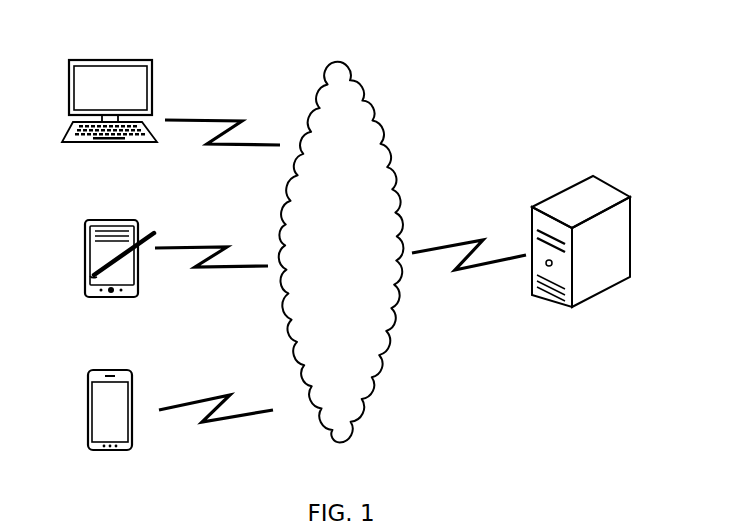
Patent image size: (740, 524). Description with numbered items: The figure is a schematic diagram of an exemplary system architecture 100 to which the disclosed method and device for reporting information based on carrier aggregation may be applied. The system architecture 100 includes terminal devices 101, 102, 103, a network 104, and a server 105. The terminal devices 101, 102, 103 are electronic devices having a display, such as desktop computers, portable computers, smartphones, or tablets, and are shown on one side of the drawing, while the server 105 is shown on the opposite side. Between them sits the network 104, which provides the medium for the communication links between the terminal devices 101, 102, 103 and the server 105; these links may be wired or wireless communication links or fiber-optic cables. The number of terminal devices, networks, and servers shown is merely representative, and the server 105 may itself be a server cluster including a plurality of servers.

The system architecture 100 is at (561, 25).
The terminal device 101 is at (110, 424).
The terminal device 102 is at (119, 272).
The terminal device 103 is at (109, 116).
The network 104 is at (341, 252).
The server 105 is at (581, 256).